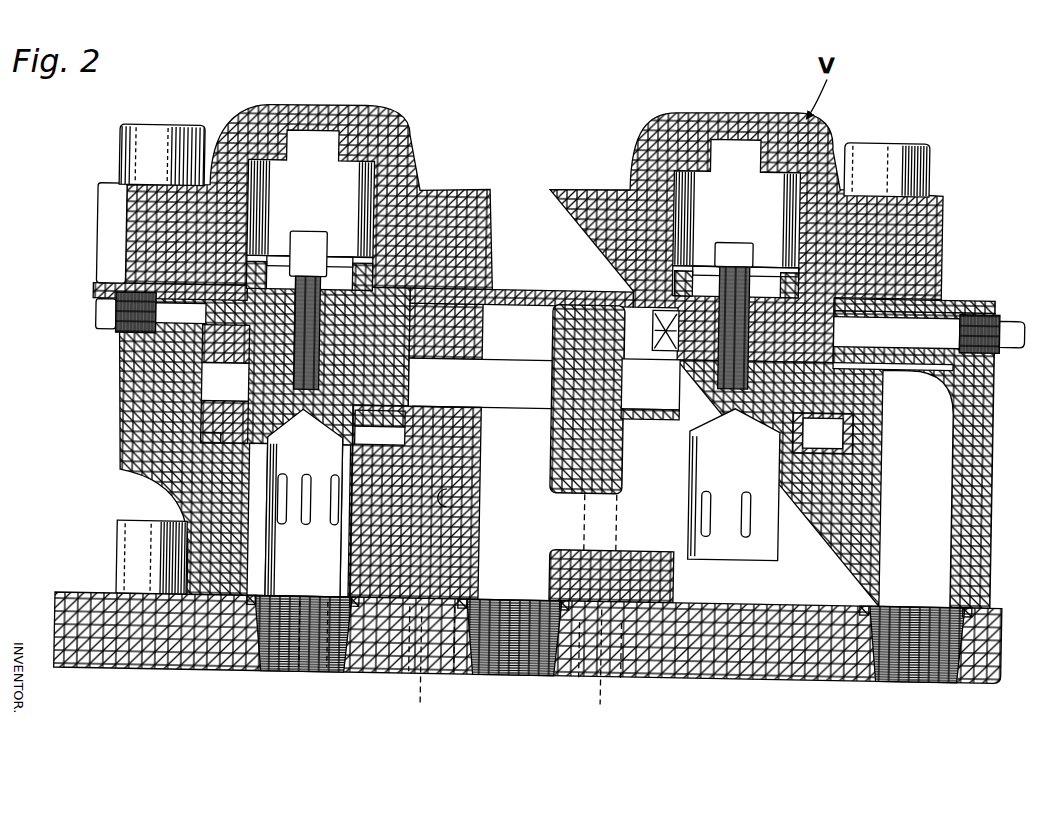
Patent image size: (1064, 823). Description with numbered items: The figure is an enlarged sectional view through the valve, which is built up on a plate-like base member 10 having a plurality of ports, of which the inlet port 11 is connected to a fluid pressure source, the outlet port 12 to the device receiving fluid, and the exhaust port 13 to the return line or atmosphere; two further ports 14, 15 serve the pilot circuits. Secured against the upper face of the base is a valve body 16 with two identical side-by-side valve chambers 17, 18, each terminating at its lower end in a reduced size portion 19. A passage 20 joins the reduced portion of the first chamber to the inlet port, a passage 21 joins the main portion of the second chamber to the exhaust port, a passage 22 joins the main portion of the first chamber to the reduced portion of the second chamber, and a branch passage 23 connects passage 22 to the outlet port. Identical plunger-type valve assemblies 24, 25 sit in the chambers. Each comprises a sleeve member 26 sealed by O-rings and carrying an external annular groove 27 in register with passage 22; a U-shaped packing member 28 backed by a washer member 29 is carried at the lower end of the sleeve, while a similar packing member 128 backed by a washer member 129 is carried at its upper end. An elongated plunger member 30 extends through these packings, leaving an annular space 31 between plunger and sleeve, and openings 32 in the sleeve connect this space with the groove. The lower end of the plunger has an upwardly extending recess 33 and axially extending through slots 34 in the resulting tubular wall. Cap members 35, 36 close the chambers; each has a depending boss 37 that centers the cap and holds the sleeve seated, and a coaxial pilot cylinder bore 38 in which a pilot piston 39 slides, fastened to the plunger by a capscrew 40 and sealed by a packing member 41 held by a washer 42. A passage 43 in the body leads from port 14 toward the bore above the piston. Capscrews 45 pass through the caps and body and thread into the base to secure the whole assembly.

The base member 10 is at (108, 640).
The inlet port 11 is at (298, 640).
The outlet port 12 is at (528, 645).
The exhaust port 13 is at (915, 655).
The port 14 is at (430, 666).
The port 15 is at (600, 669).
The valve body 16 is at (146, 526).
The valve chamber 17 is at (198, 365).
The valve chamber 18 is at (700, 394).
The reduced size portion 19 is at (392, 513).
The passage 20 is at (322, 600).
The passage 21 is at (955, 498).
The passage 22 is at (630, 575).
The branch passage 23 is at (470, 545).
The valve assembly 24 is at (197, 446).
The valve assembly 25 is at (838, 428).
The sleeve member 26 is at (203, 414).
The annular groove 27 is at (208, 387).
The packing member 28 is at (405, 440).
The washer member 29 is at (397, 429).
The plunger member 30 is at (333, 408).
The annular space 31 is at (362, 367).
The openings 32 is at (380, 384).
The recess 33 is at (340, 535).
The slots 34 is at (294, 517).
The cap member 35 is at (390, 122).
The cap member 36 is at (636, 128).
The boss 37 is at (239, 281).
The pilot cylinder bore 38 is at (368, 180).
The pilot piston 39 is at (382, 283).
The capscrew 40 is at (295, 236).
The packing member 41 is at (244, 256).
The washer 42 is at (330, 250).
The passage 43 is at (445, 490).
The capscrews 45 is at (172, 128).
The packing member 128 is at (230, 320).
The washer member 129 is at (237, 296).